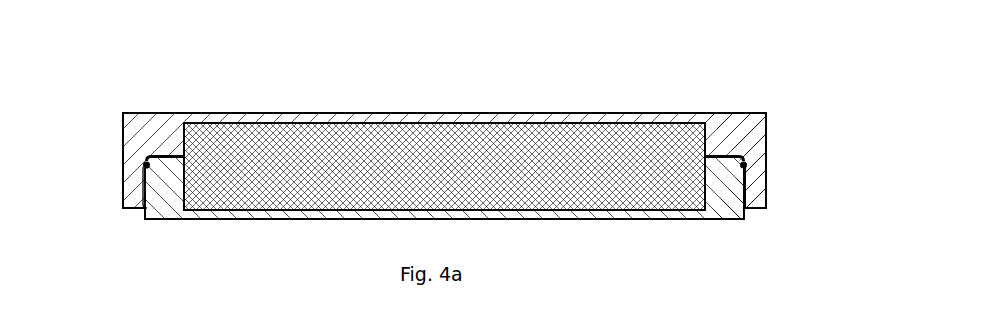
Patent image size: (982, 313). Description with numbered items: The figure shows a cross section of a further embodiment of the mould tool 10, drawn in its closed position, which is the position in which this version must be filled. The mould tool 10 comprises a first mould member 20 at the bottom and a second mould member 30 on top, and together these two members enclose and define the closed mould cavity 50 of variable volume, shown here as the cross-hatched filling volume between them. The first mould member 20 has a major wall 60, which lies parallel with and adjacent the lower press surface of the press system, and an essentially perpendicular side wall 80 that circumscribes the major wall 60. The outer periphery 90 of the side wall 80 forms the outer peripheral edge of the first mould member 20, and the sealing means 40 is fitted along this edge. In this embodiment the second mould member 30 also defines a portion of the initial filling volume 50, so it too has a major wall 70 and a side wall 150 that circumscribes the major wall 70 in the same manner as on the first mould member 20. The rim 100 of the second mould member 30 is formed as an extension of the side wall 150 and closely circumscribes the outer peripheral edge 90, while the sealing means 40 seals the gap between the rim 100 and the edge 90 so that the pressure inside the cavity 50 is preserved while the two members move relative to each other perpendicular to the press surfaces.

The mould tool 10 is at (101, 78).
The first mould member 20 is at (199, 241).
The second mould member 30 is at (574, 97).
The sealing means 40 is at (142, 165).
The mould cavity 50 is at (562, 180).
The major wall 60 is at (362, 212).
The major wall 70 is at (320, 120).
The side wall 80 is at (721, 199).
The outer periphery 90 is at (746, 176).
The rim 100 is at (767, 174).
The side wall 150 is at (718, 138).